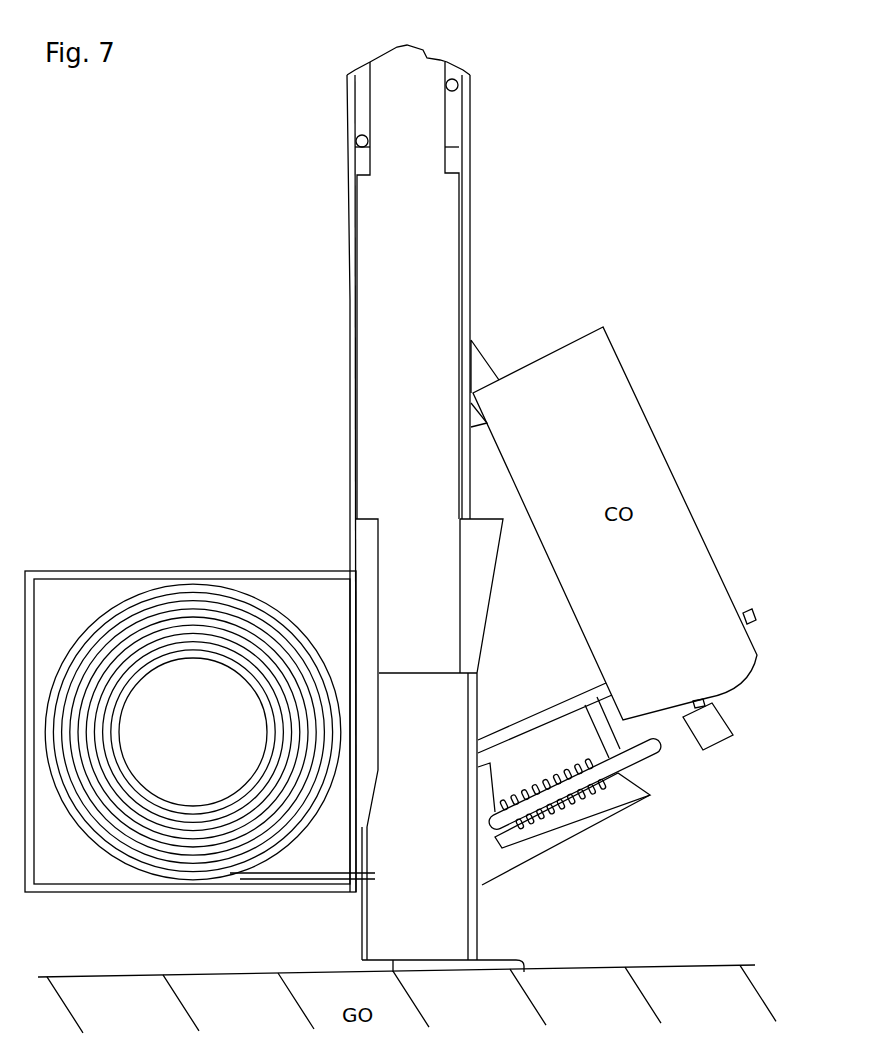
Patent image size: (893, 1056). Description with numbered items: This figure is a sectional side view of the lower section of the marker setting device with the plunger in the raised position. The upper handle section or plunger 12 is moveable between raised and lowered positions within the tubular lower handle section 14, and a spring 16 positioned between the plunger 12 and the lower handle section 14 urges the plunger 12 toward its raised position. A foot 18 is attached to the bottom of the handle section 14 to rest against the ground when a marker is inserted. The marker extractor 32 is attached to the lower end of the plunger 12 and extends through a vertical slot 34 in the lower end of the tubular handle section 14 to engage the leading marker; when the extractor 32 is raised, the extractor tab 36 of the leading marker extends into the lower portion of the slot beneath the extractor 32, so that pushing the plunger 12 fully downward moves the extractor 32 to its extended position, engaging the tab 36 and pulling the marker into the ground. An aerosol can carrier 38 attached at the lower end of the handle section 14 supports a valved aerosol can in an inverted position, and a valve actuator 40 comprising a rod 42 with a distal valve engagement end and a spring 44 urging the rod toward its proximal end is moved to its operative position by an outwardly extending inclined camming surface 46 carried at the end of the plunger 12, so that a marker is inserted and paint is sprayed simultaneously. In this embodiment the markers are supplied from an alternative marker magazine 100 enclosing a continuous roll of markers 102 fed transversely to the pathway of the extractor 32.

The plunger 12 is at (377, 198).
The lower handle section 14 is at (467, 242).
The spring 16 is at (453, 79).
The foot 18 is at (520, 953).
The marker extractor 32 is at (365, 563).
The vertical slot 34 is at (365, 918).
The extractor tab 36 is at (372, 846).
The aerosol can carrier 38 is at (752, 608).
The valve actuator 40 is at (628, 820).
The rod 42 is at (653, 748).
The spring 44 is at (538, 827).
The inclined camming surface 46 is at (478, 577).
The marker magazine 100 is at (182, 527).
The continuous roll of markers 102 is at (120, 605).